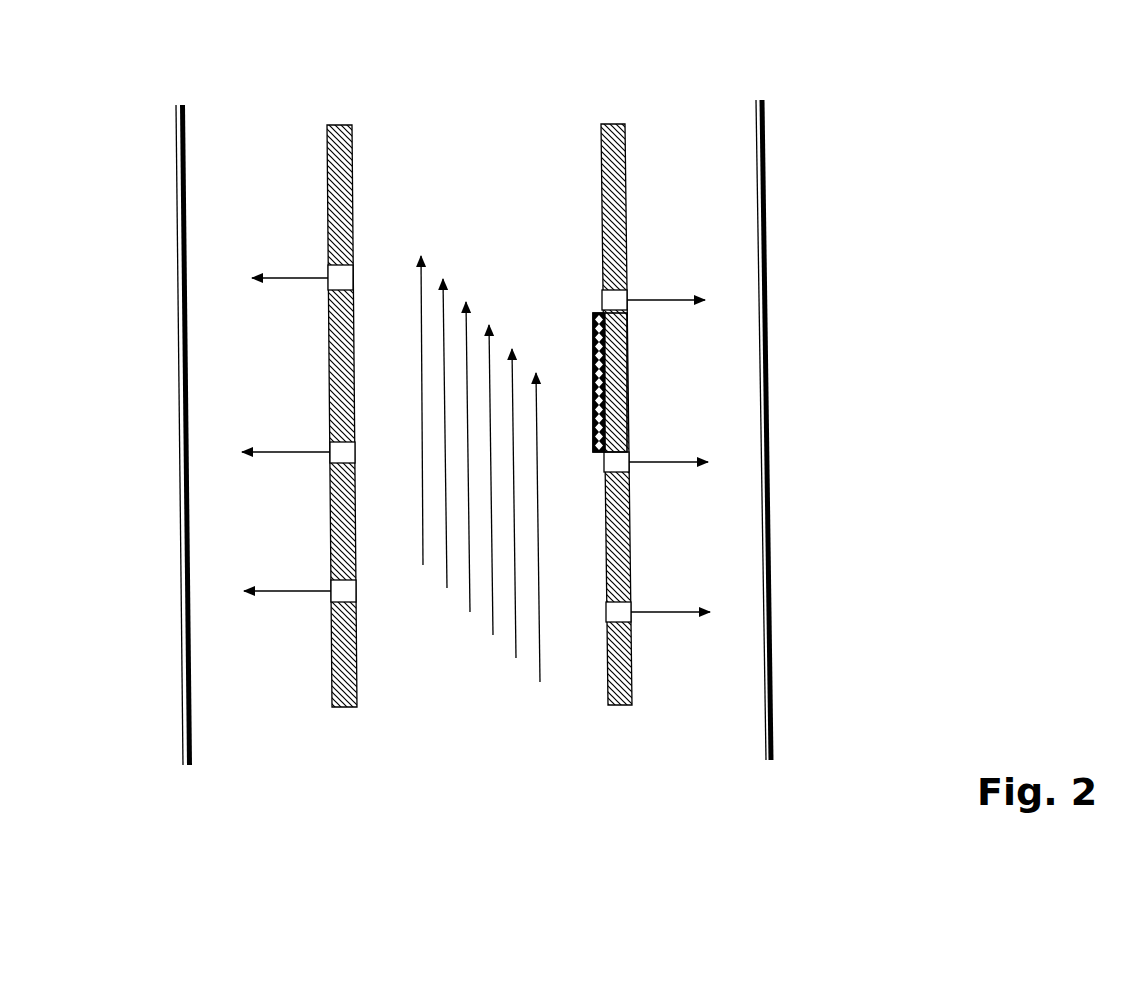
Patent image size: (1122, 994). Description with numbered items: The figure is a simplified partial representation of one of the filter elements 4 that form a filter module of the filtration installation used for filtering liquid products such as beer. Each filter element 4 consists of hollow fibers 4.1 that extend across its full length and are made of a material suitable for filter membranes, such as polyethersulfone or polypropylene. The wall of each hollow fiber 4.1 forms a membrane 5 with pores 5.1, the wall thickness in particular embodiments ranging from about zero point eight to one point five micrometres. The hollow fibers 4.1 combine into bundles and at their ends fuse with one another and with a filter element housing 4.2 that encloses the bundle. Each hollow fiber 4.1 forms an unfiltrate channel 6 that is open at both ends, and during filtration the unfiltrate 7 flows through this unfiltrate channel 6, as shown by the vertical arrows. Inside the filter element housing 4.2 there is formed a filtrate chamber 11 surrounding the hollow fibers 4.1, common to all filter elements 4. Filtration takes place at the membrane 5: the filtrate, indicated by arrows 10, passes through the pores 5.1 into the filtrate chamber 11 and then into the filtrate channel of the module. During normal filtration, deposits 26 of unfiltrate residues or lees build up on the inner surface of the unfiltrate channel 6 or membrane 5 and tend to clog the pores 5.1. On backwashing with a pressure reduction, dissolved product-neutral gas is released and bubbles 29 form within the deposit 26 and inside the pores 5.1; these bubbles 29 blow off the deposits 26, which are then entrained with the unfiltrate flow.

The filter element 4 is at (626, 415).
The hollow fiber 4.1 is at (573, 435).
The filter element housing 4.2 is at (768, 448).
The membrane 5 is at (620, 508).
The pores 5.1 is at (345, 590).
The unfiltrate channel 6 is at (482, 179).
The unfiltrate 7 is at (480, 476).
The arrows 10 is at (295, 278).
The filtrate chamber 11 is at (272, 141).
The deposits 26 is at (582, 336).
The bubbles 29 is at (607, 357).